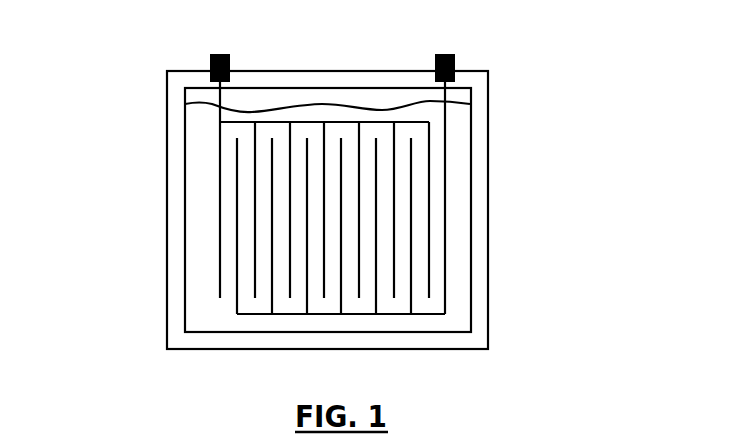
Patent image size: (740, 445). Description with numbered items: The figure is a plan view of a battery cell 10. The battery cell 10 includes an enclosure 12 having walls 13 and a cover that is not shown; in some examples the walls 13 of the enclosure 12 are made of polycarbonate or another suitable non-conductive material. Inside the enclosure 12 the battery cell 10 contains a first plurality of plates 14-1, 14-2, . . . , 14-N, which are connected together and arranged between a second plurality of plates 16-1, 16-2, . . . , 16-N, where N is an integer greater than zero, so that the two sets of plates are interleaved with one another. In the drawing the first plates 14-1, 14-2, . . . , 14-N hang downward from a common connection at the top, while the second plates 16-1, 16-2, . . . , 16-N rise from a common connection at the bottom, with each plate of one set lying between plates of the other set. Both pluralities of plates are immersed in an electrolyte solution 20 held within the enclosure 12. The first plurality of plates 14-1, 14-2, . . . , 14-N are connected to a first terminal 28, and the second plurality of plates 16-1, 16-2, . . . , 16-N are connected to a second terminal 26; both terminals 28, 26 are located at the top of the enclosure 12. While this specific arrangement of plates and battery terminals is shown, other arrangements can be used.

The battery cell 10 is at (130, 52).
The enclosure 12 is at (146, 114).
The walls 13 is at (167, 153).
The first plate 14-1 is at (219, 183).
The first plate 14-2 is at (254, 203).
The first plate 14-N is at (429, 180).
The second plate 16-1 is at (237, 248).
The second plate 16-2 is at (271, 275).
The second plate 16-N is at (446, 220).
The electrolyte solution 20 is at (457, 130).
The second terminal 26 is at (438, 54).
The first terminal 28 is at (222, 53).